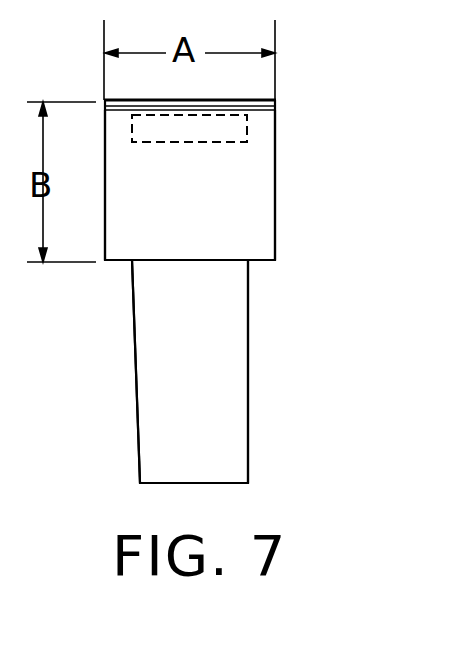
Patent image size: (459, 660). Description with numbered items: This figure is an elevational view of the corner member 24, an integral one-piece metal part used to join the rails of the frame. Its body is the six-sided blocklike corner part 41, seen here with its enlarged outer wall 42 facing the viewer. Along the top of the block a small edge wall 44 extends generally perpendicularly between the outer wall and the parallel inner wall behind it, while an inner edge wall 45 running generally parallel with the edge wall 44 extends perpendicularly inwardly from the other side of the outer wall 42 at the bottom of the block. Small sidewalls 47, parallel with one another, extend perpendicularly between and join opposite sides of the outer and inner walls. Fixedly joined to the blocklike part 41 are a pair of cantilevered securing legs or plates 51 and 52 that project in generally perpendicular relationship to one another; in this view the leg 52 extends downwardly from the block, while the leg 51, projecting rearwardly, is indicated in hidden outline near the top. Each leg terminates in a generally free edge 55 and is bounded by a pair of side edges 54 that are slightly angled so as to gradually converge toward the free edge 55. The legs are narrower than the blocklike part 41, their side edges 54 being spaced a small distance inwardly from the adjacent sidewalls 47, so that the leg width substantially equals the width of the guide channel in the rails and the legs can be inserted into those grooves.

The corner member 24 is at (287, 98).
The blocklike corner part 41 is at (240, 203).
The outer wall 42 is at (178, 205).
The edge wall 44 is at (158, 73).
The inner edge wall 45 is at (128, 263).
The sidewalls 47 is at (105, 187).
The securing leg 51 is at (172, 126).
The securing leg 52 is at (230, 437).
The side edges 54 is at (137, 397).
The free edge 55 is at (208, 485).